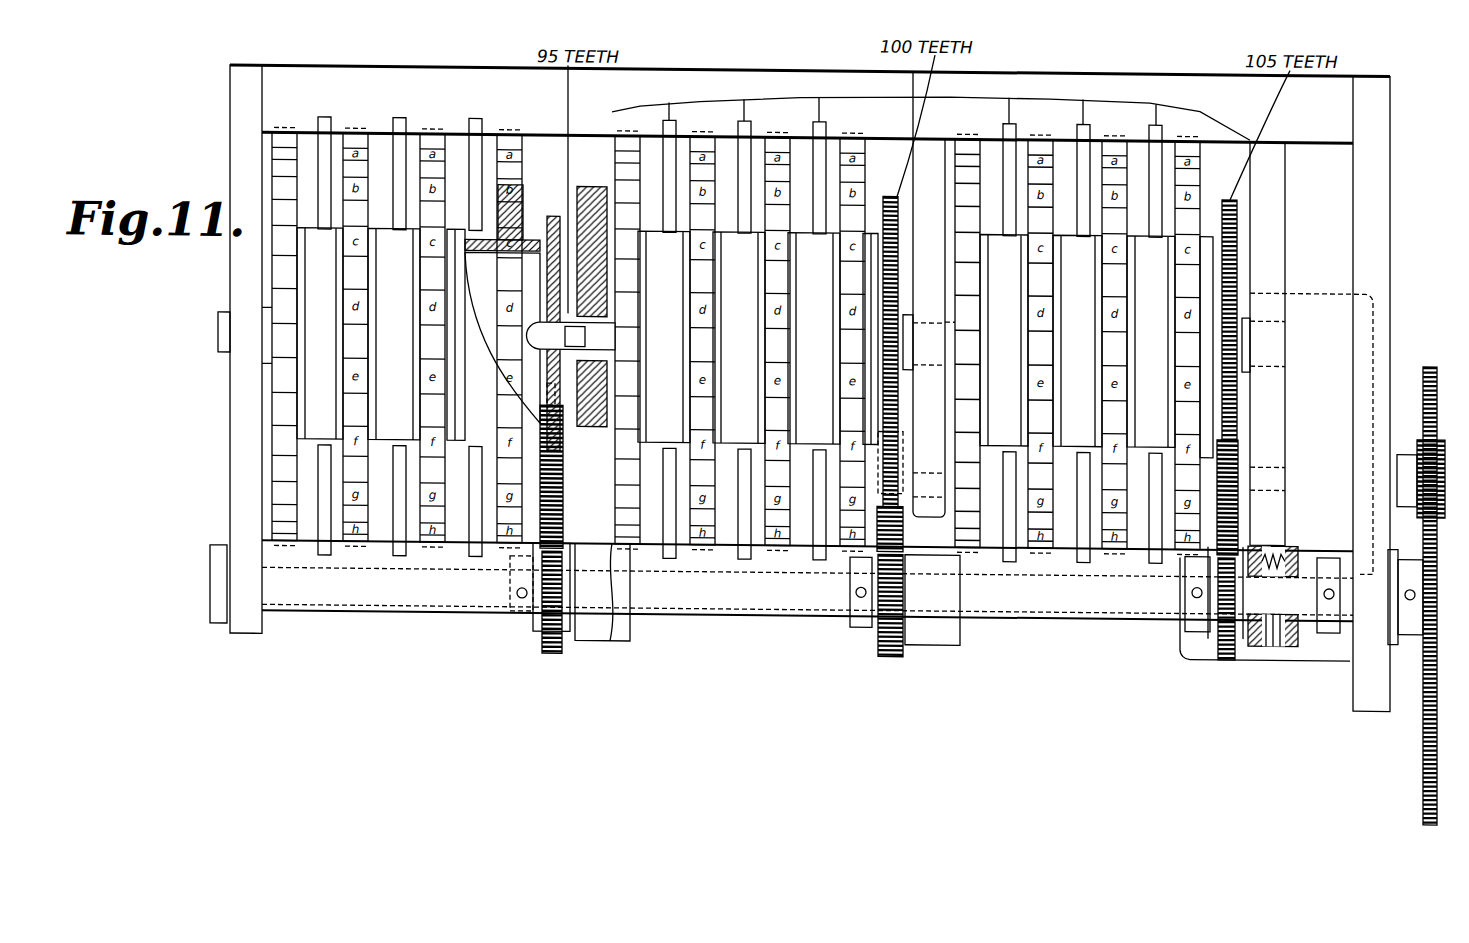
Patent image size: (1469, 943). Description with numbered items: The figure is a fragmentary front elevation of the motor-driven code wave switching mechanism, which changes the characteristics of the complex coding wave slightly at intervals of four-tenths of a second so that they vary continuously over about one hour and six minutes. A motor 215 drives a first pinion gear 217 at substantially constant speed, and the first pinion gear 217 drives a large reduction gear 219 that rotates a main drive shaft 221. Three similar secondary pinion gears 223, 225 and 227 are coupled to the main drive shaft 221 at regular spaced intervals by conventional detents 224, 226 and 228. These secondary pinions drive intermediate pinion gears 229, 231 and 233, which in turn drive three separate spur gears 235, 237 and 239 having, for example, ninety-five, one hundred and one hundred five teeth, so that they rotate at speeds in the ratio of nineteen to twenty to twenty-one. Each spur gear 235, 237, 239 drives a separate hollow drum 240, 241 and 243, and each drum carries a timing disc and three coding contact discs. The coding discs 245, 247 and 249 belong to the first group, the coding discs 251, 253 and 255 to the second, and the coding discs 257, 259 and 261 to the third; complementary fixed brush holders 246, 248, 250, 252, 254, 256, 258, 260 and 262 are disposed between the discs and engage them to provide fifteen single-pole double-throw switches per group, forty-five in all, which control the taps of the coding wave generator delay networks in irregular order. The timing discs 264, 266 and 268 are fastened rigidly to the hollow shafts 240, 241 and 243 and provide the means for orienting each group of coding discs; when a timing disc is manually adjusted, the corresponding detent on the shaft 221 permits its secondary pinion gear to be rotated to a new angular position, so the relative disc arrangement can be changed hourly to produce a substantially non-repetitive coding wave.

The motor 215 is at (1320, 283).
The first pinion gear 217 is at (1417, 433).
The large reduction gear 219 is at (1423, 725).
The main drive shaft 221 is at (1135, 608).
The secondary pinion gear 223 is at (550, 651).
The detent 224 is at (626, 640).
The secondary pinion gear 225 is at (890, 651).
The detent 226 is at (942, 640).
The secondary pinion gear 227 is at (1225, 652).
The detent 228 is at (1258, 640).
The intermediate pinion gear 229 is at (566, 478).
The intermediate pinion gear 231 is at (932, 305).
The intermediate pinion gear 233 is at (1240, 517).
The spur gear 235 is at (553, 213).
The spur gear 237 is at (890, 195).
The spur gear 239 is at (1240, 215).
The hollow drum 240 is at (310, 276).
The hollow drum 241 is at (752, 318).
The hollow drum 243 is at (1092, 351).
The coding disc 245 is at (355, 125).
The fixed brush holder 246 is at (325, 116).
The coding disc 247 is at (433, 125).
The fixed brush holder 248 is at (399, 116).
The coding disc 249 is at (510, 125).
The fixed brush holder 250 is at (476, 116).
The coding disc 251 is at (700, 130).
The fixed brush holder 252 is at (669, 116).
The coding disc 253 is at (777, 130).
The fixed brush holder 254 is at (744, 116).
The coding disc 255 is at (852, 130).
The fixed brush holder 256 is at (819, 116).
The coding disc 257 is at (1040, 130).
The fixed brush holder 258 is at (1009, 116).
The coding disc 259 is at (1114, 130).
The fixed brush holder 260 is at (1083, 116).
The coding disc 261 is at (1188, 130).
The fixed brush holder 262 is at (1156, 116).
The timing disc 264 is at (276, 125).
The timing disc 266 is at (625, 128).
The timing disc 268 is at (967, 130).